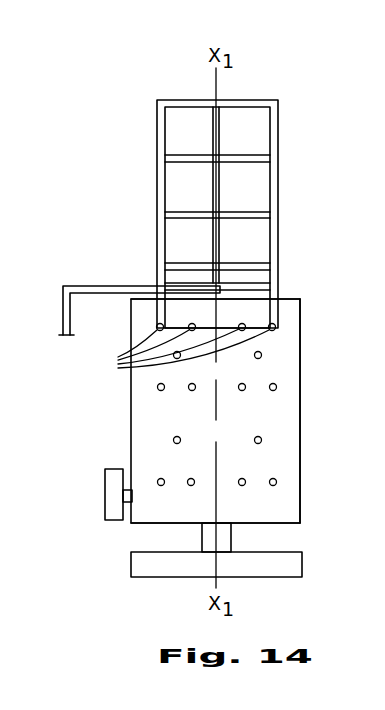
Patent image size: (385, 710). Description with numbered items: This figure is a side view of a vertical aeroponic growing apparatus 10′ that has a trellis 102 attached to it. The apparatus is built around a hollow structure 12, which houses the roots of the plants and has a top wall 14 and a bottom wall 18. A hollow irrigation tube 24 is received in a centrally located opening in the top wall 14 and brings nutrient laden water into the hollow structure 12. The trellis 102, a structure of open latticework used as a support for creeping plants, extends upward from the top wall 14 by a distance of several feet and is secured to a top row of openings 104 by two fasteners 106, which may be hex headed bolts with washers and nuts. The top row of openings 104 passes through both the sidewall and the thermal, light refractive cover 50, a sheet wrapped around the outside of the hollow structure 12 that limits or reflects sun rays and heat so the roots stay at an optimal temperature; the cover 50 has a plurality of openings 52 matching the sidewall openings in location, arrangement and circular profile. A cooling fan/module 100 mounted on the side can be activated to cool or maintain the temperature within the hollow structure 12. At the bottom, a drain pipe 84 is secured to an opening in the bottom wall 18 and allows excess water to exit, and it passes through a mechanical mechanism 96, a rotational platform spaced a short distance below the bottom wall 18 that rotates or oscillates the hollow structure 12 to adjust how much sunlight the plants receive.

The vertical aeroponic growing apparatus 10′ is at (88, 120).
The trellis 102 is at (278, 128).
The irrigation tube 24 is at (99, 286).
The top wall 14 is at (298, 298).
The hollow structure 12 is at (309, 297).
The fasteners 106 is at (156, 327).
The top row of openings 104 is at (174, 351).
The openings 52 is at (262, 355).
The thermal, light refractive cover 50 is at (285, 407).
The cooling fan/module 100 is at (110, 469).
The drain pipe 84 is at (232, 538).
The bottom wall 18 is at (300, 524).
The mechanical mechanism 96 is at (294, 563).